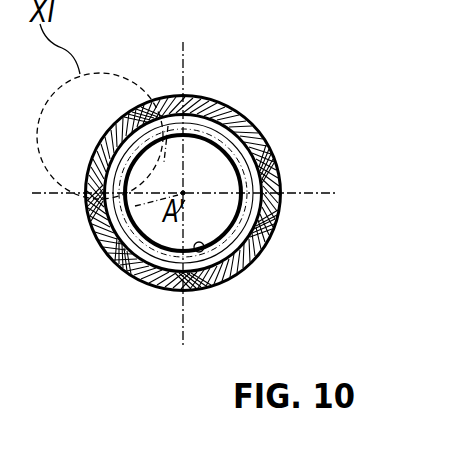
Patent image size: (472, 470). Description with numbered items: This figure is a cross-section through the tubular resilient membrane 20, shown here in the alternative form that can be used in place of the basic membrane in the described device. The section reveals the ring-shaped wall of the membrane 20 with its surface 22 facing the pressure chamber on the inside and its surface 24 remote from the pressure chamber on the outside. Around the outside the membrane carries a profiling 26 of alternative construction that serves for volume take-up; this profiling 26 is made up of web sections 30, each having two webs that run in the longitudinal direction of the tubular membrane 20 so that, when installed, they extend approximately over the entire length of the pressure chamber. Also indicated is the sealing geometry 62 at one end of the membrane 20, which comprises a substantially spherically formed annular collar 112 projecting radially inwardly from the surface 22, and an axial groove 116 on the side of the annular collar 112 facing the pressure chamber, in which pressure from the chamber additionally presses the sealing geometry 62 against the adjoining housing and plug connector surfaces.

The tubular resilient membrane 20 is at (202, 185).
The surface facing the pressure chamber 22 is at (183, 193).
The surface remote from the pressure chamber 24 is at (236, 108).
The profiling 26 is at (270, 266).
The web sections 30 is at (147, 92).
The sealing geometry 62 is at (150, 160).
The annular collar 112 is at (203, 247).
The axial groove 116 is at (279, 158).